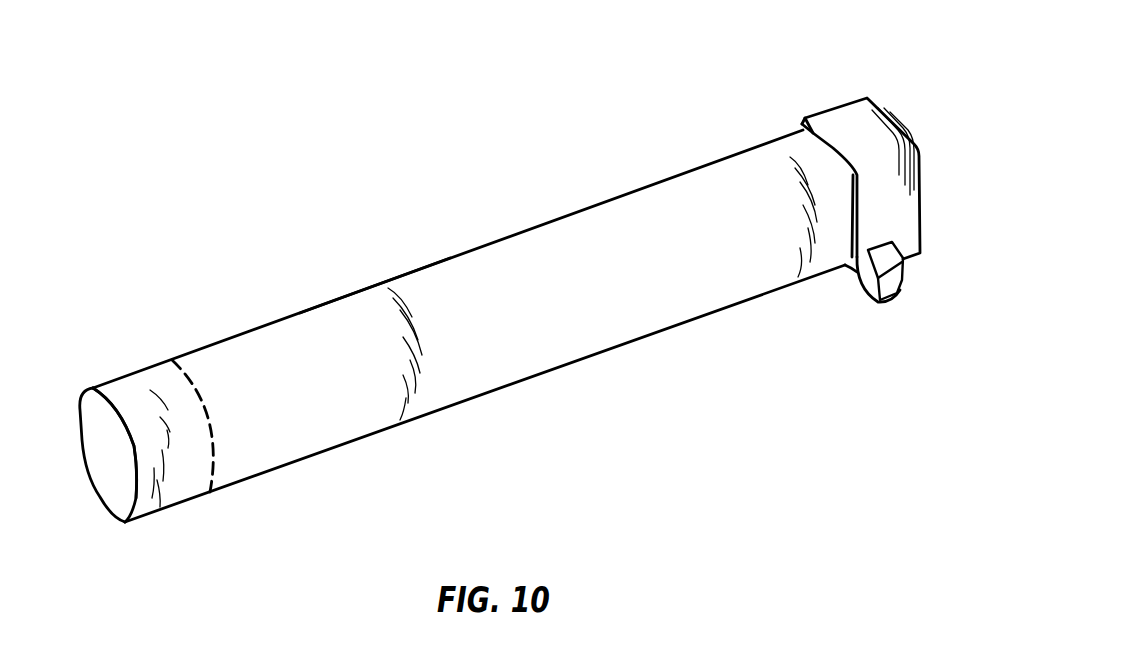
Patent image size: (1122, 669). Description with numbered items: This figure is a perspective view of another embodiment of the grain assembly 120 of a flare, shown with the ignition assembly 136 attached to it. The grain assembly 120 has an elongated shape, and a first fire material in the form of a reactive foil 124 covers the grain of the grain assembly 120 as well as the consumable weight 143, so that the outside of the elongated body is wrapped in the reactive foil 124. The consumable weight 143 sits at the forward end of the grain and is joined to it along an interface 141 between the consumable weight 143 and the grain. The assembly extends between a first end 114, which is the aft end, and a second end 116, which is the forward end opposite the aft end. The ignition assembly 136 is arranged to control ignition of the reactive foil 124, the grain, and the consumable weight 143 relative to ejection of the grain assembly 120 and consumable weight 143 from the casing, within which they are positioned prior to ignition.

The first end 114 is at (900, 118).
The second end 116 is at (181, 530).
The grain assembly 120 is at (634, 305).
The reactive foil 124 is at (348, 333).
The ignition assembly 136 is at (919, 274).
The interface 141 is at (214, 455).
The consumable weight 143 is at (130, 390).